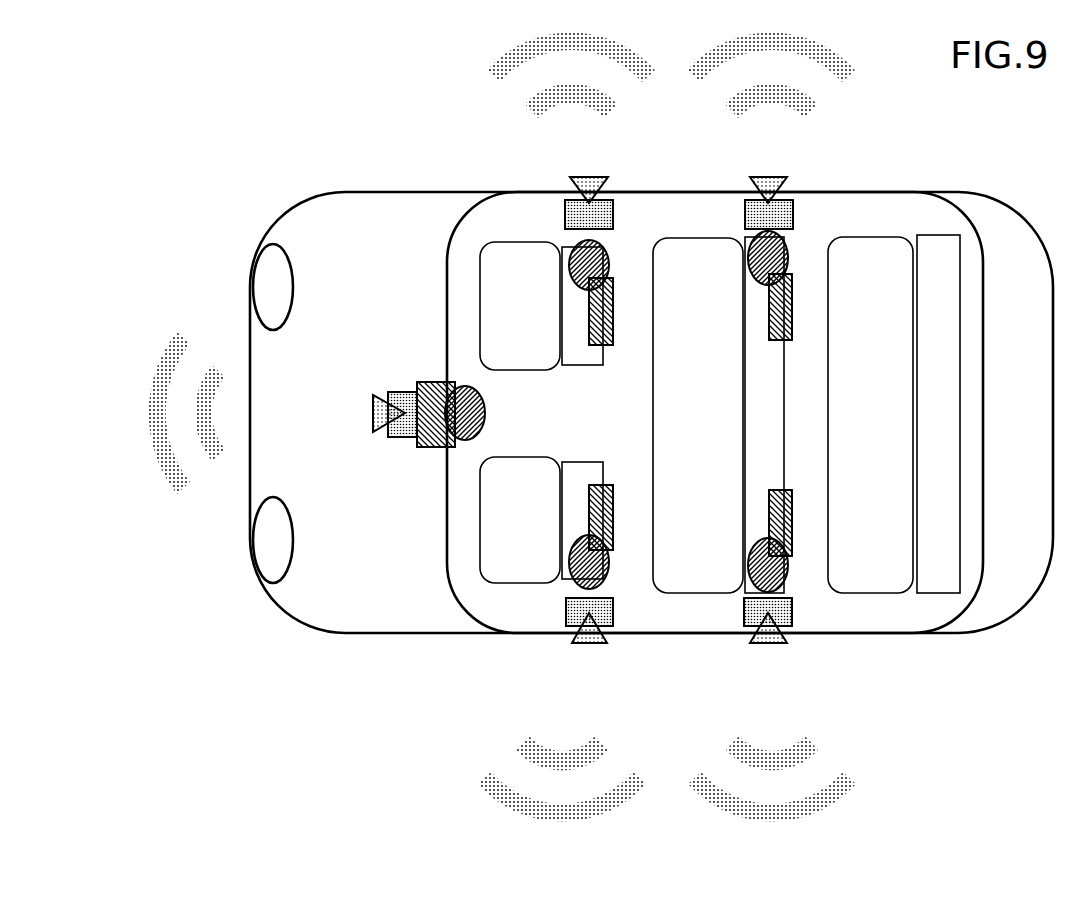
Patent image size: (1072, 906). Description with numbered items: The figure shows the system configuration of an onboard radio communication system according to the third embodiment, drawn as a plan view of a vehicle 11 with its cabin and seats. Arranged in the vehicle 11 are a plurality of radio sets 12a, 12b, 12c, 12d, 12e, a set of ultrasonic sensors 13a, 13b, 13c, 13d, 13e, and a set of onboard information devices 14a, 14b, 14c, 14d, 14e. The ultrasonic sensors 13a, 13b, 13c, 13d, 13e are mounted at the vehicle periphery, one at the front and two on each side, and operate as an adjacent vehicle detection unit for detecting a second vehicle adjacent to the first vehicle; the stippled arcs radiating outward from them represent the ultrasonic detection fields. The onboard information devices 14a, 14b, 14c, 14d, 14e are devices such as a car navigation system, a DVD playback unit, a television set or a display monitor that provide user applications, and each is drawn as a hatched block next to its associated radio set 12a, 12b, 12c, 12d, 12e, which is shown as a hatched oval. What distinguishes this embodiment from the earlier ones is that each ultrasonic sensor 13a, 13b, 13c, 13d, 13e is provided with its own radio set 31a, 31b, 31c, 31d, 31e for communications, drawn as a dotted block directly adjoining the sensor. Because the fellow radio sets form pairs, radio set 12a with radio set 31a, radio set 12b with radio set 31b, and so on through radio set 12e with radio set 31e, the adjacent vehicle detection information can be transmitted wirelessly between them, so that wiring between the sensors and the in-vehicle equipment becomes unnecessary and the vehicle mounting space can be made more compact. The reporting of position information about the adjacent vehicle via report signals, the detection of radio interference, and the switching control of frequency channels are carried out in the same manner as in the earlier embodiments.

The vehicle 11 is at (355, 635).
The radio set 12a is at (486, 410).
The radio set 12b is at (575, 548).
The radio set 12c is at (758, 548).
The radio set 12d is at (570, 285).
The radio set 12e is at (753, 285).
The ultrasonic sensor 13a is at (370, 413).
The ultrasonic sensor 13b is at (586, 645).
The ultrasonic sensor 13c is at (766, 645).
The ultrasonic sensor 13d is at (582, 176).
The ultrasonic sensor 13e is at (773, 176).
The onboard information device 14a is at (430, 380).
The onboard information device 14b is at (605, 484).
The onboard information device 14c is at (777, 490).
The onboard information device 14d is at (613, 303).
The onboard information device 14e is at (793, 305).
The radio set 31a is at (395, 390).
The radio set 31b is at (613, 615).
The radio set 31c is at (793, 615).
The radio set 31d is at (565, 215).
The radio set 31e is at (793, 215).